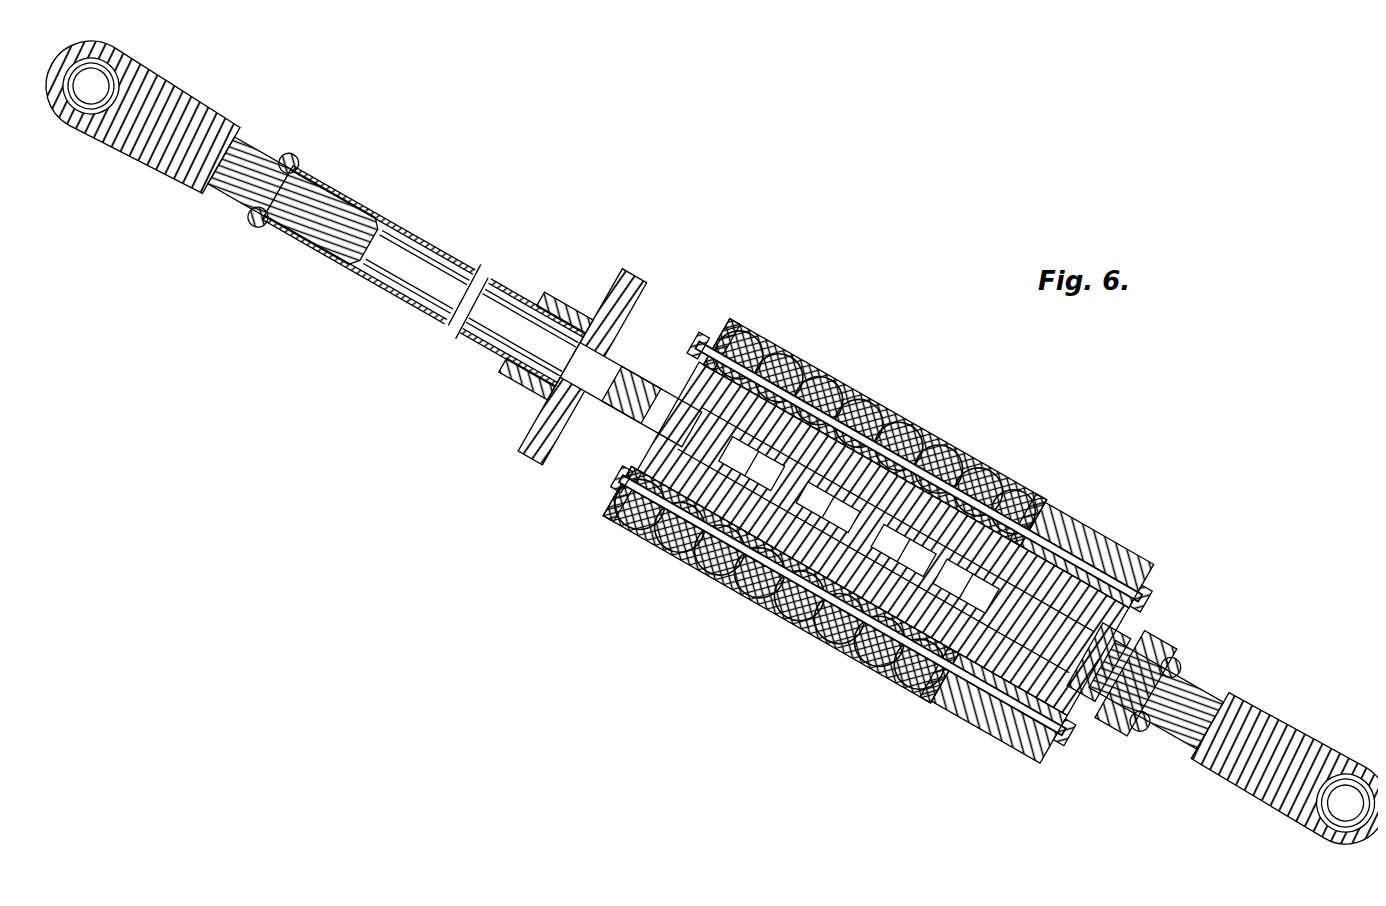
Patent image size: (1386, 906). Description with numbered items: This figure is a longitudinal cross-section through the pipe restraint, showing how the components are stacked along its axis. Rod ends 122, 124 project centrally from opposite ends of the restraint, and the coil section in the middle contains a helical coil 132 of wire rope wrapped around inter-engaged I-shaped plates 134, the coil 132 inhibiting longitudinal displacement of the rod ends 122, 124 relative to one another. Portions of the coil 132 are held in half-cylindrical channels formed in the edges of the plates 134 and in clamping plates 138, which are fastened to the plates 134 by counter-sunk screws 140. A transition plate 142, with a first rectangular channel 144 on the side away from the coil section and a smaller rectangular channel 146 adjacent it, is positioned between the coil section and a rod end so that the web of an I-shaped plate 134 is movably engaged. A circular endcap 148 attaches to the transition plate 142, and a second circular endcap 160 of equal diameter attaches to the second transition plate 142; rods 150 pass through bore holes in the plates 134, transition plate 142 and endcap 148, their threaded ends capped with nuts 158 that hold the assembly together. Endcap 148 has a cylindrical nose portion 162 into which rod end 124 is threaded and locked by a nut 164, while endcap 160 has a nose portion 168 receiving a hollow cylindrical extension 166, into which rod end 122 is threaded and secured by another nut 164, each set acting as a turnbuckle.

The rod end 122 is at (182, 92).
The rod end 124 is at (1272, 710).
The helical coil 132 is at (805, 370).
The I-shaped plate 134 is at (875, 385).
The clamping plate 138 is at (762, 325).
The counter-sunk screw 140 is at (880, 420).
The transition plate 142 is at (600, 400).
The first rectangular channel 144 is at (630, 372).
The smaller rectangular channel 146 is at (642, 425).
The circular endcap 148 is at (1118, 574).
The rod 150 is at (976, 708).
The nut 158 is at (700, 332).
The circular endcap 160 is at (632, 275).
The cylindrical nose portion 162 is at (1150, 640).
The nut 164 is at (300, 155).
The hollow cylindrical extension 166 is at (392, 220).
The nose portion 168 is at (548, 293).